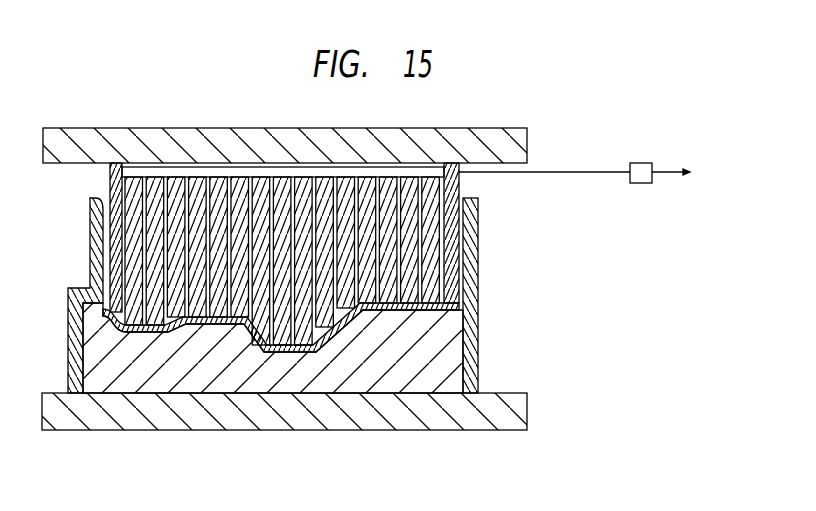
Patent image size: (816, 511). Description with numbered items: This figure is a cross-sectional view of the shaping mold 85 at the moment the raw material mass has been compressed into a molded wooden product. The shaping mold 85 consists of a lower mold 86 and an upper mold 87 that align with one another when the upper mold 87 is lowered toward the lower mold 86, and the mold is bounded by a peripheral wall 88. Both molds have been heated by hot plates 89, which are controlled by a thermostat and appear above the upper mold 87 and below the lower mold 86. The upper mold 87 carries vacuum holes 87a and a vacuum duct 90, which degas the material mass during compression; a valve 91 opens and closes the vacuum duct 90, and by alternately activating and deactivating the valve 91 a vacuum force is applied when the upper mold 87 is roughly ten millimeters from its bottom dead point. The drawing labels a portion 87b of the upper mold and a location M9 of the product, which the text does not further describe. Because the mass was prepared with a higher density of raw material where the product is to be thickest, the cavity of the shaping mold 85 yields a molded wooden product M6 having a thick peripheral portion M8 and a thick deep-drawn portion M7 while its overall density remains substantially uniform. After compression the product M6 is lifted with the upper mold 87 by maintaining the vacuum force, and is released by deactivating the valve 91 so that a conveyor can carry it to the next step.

The shaping mold 85 is at (332, 278).
The lower mold 86 is at (443, 358).
The upper mold 87 is at (458, 286).
The vacuum holes 87a is at (420, 232).
The top plate portion of heat radiating member 87b is at (170, 177).
The peripheral wall 88 is at (463, 258).
The hot plates 89 is at (518, 144).
The vacuum duct 90 is at (604, 172).
The valve 91 is at (641, 163).
The molded wooden product M6 is at (383, 310).
The thick deep-drawn portion M7 is at (253, 333).
The thick peripheral portion M8 is at (118, 317).
The measurement point M9 is at (460, 300).